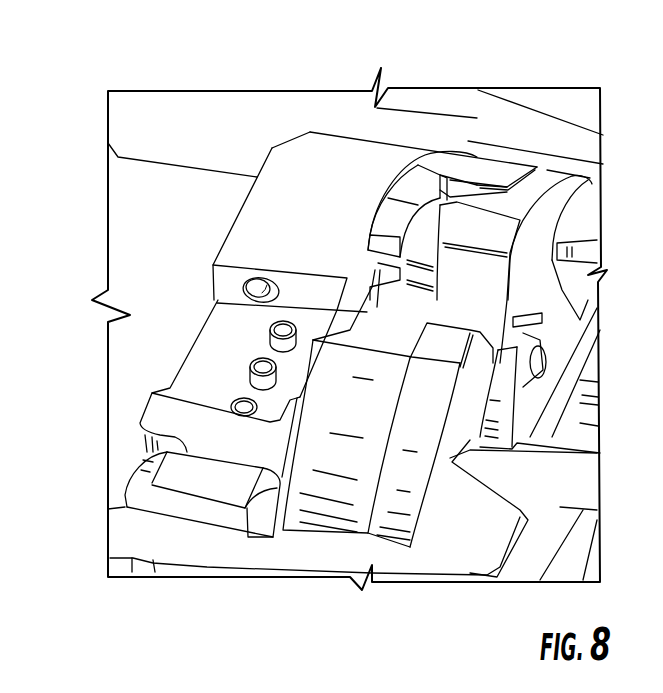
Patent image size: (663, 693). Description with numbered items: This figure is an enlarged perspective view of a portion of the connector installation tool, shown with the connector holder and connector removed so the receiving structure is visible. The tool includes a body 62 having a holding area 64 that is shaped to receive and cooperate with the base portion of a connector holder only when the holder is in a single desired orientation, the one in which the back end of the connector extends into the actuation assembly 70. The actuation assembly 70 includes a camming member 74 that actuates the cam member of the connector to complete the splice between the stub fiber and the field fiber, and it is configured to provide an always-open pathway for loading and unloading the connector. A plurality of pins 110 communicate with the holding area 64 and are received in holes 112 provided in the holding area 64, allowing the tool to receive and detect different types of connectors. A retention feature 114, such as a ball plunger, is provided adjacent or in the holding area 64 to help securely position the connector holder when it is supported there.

The body 62 is at (162, 547).
The holding area 64 is at (222, 323).
The actuation assembly 70 is at (553, 184).
The camming member 74 is at (450, 195).
The pins 110 is at (252, 368).
The holes 112 is at (232, 410).
The retention feature 114 is at (277, 281).